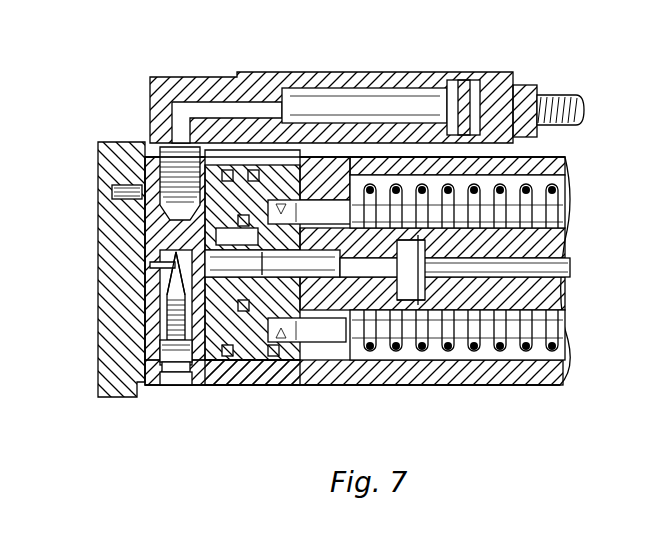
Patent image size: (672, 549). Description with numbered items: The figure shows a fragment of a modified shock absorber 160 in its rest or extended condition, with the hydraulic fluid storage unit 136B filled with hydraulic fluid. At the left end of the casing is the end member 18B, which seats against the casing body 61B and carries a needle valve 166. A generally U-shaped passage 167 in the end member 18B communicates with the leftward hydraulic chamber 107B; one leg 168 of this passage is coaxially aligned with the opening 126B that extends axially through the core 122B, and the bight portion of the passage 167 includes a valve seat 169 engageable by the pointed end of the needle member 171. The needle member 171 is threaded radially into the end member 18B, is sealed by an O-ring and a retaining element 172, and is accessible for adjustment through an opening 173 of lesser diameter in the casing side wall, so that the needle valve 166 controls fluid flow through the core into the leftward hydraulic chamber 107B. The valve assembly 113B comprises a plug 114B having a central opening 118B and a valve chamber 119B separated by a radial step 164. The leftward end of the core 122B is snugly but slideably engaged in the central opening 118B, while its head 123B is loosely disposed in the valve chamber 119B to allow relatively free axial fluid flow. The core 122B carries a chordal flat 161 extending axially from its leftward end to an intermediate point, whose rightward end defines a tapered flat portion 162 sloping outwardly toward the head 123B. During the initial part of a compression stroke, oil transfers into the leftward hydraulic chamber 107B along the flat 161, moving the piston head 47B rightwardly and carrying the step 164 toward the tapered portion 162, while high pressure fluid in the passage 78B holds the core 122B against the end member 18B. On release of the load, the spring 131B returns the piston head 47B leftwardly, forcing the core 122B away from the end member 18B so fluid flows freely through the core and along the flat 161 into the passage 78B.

The hydraulic fluid storage unit 136B is at (420, 70).
The end member 18B is at (150, 253).
The housing 61B is at (553, 300).
The leg 168 is at (190, 236).
The central opening 118B is at (252, 262).
The chordal flat 161 is at (272, 263).
The tapered flat portion 162 is at (276, 263).
The opening 126B is at (338, 262).
The core 122B is at (362, 236).
The radial step 164 is at (307, 331).
The spring 131B is at (548, 212).
The piston head 47B is at (356, 372).
The passage 78B is at (570, 265).
The plug 114B is at (420, 292).
The head 123B is at (420, 236).
The valve chamber 119B is at (410, 281).
The valve seat 169 is at (172, 297).
The U-shaped passage 167 is at (150, 265).
The needle valve 166 is at (148, 320).
The needle member 171 is at (150, 335).
The washer 172 is at (197, 374).
The opening 173 is at (165, 383).
The valve assembly 113B is at (210, 378).
The leftward hydraulic chamber 107B is at (248, 378).
The shock absorber 160 is at (572, 428).